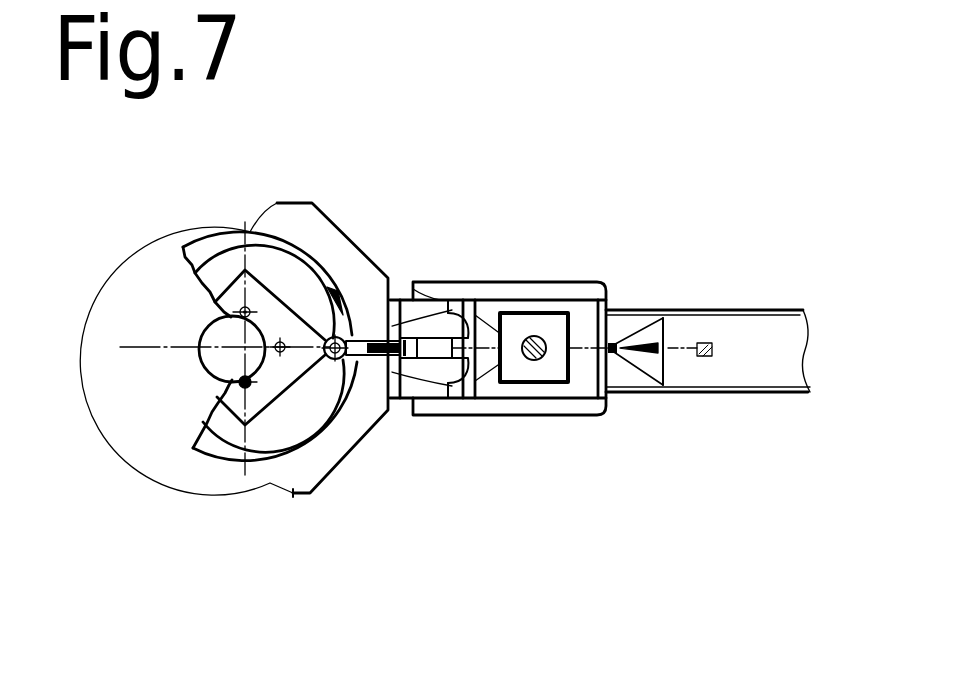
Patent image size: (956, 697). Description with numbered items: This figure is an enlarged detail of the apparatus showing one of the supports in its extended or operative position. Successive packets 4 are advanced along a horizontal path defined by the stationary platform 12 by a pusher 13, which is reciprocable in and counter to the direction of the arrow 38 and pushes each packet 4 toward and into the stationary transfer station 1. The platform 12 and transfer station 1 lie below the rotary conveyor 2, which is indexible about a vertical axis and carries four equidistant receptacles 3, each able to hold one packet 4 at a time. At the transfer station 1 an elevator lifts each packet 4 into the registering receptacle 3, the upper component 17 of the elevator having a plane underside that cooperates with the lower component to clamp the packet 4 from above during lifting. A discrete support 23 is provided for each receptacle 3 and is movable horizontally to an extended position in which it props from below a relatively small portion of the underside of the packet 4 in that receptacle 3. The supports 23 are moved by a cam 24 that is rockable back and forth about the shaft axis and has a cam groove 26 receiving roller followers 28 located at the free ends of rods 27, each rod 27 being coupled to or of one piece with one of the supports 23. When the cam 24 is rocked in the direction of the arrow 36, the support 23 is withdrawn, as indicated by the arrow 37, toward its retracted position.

The transfer station 1 is at (452, 326).
The rotary conveyor 2 is at (297, 203).
The receptacle 3 is at (582, 296).
The packet 4 is at (488, 362).
The platform 12 is at (757, 358).
The pusher 13 is at (610, 348).
The upper component 17 is at (520, 334).
The support 23 is at (418, 338).
The cam 24 is at (310, 253).
The cam groove 26 is at (290, 400).
The rod 27 is at (361, 345).
The roller follower 28 is at (356, 336).
The arrow 36 is at (334, 287).
The arrow 37 is at (402, 382).
The arrow 38 is at (657, 354).